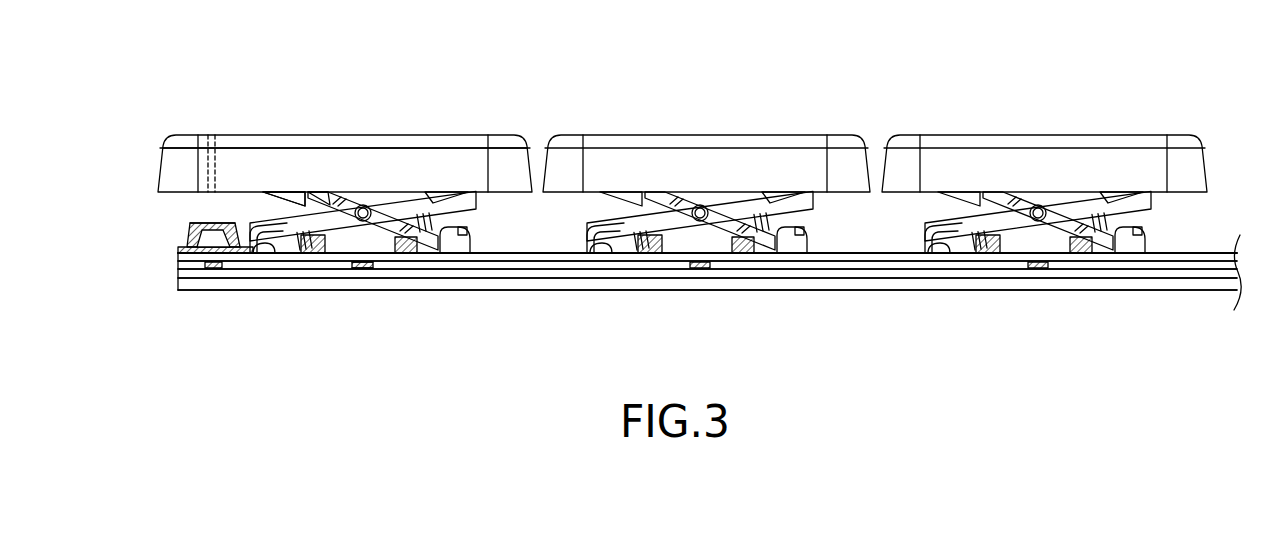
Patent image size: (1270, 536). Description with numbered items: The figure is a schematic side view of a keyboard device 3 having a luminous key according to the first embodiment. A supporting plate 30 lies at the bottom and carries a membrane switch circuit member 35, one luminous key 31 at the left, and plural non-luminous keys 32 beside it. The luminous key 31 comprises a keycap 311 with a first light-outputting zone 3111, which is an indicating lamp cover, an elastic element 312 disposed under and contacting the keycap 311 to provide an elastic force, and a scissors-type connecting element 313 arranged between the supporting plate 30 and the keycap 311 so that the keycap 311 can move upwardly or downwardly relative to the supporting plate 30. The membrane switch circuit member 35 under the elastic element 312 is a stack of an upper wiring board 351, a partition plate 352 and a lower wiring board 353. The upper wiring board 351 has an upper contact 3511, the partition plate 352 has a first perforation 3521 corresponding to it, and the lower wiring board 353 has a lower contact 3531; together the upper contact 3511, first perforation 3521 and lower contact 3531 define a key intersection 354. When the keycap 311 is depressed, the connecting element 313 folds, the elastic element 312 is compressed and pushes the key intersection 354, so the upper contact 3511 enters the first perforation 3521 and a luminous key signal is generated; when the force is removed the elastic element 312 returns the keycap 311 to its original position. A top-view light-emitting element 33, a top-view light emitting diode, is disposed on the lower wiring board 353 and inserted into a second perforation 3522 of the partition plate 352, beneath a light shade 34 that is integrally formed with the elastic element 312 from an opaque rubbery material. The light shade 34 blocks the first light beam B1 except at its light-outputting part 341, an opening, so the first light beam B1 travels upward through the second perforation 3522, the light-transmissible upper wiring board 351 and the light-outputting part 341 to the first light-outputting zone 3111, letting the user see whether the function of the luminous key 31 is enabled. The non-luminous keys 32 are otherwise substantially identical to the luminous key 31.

The keyboard device 3 is at (1042, 56).
The supporting plate 30 is at (541, 282).
The luminous key 31 is at (407, 134).
The keycap 311 is at (472, 142).
The first light-outputting zone 3111 is at (212, 134).
The elastic element 312 is at (295, 200).
The connecting element 313 is at (320, 194).
The non-luminous key 32 is at (752, 136).
The top-view light-emitting element 33 is at (224, 268).
The light shade 34 is at (189, 239).
The light-outputting part 341 is at (209, 223).
The membrane switch circuit member 35 is at (889, 262).
The upper wiring board 351 is at (625, 257).
The partition plate 352 is at (672, 264).
The lower wiring board 353 is at (736, 272).
The upper contact 3511 is at (403, 305).
The first perforation 3521 is at (358, 265).
The second perforation 3522 is at (205, 265).
The lower contact 3531 is at (362, 268).
The key intersection 354 is at (657, 329).
The first light beam B1 is at (215, 268).